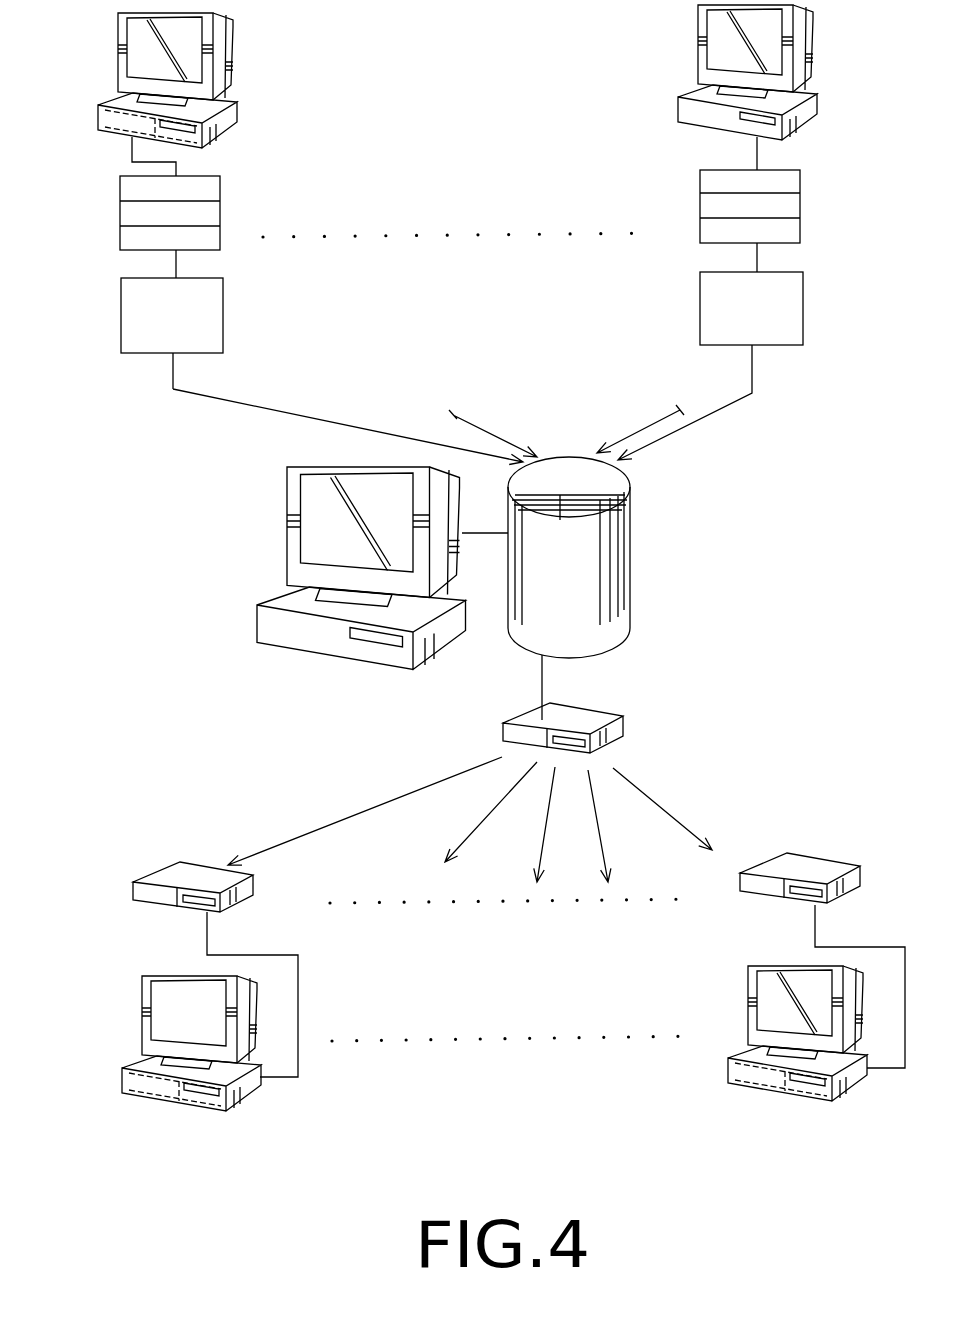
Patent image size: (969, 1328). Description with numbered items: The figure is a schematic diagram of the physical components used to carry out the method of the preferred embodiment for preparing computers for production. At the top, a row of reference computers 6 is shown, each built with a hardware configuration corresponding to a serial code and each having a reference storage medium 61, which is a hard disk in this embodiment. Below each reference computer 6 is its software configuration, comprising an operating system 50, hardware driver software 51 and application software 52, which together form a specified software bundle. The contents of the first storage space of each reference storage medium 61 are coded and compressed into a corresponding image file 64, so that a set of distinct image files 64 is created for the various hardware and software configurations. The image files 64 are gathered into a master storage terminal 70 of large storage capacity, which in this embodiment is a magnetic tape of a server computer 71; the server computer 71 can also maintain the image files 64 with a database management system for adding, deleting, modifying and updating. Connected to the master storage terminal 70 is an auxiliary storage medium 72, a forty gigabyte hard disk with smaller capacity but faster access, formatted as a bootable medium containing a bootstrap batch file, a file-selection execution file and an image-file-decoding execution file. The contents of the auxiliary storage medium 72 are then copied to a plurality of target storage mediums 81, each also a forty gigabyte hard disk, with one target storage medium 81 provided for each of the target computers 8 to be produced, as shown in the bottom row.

The reference computer 6 is at (132, 81).
The reference storage medium 61 is at (107, 133).
The operating system 50 is at (131, 218).
The hardware driver software 51 is at (138, 215).
The application software 52 is at (140, 240).
The image file 64 is at (133, 330).
The master storage terminal 70 is at (612, 583).
The server computer 71 is at (325, 505).
The auxiliary storage medium 72 is at (522, 717).
The target storage medium 81 is at (165, 873).
The target computer 8 is at (162, 998).